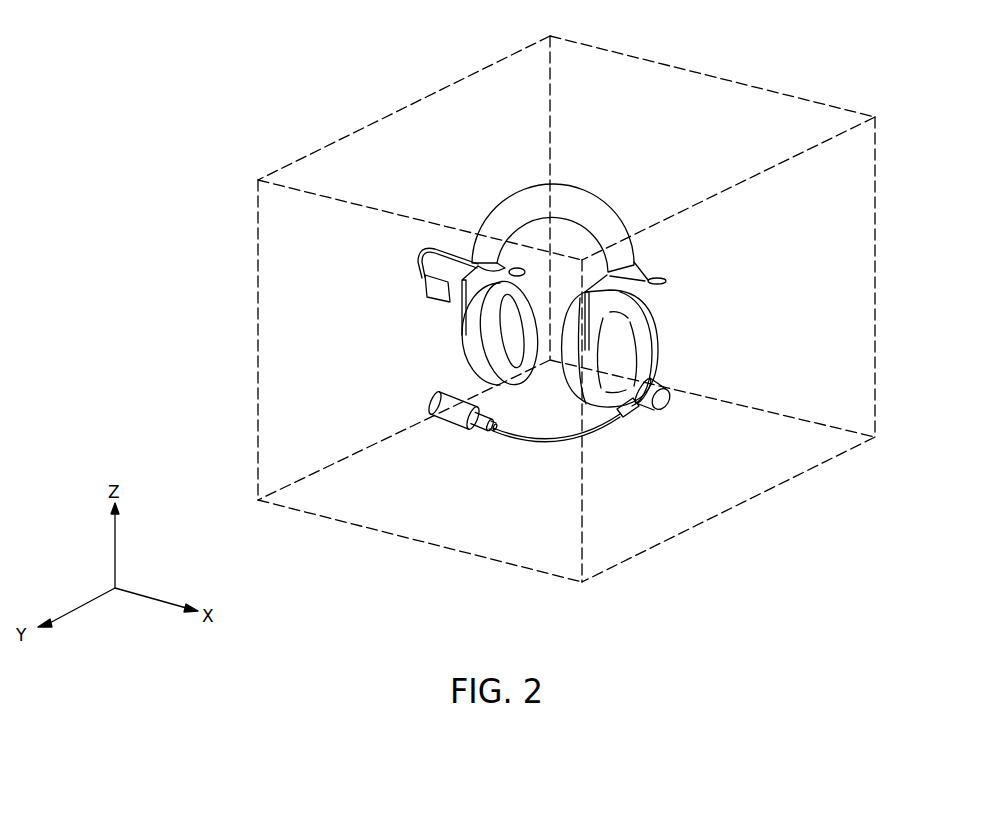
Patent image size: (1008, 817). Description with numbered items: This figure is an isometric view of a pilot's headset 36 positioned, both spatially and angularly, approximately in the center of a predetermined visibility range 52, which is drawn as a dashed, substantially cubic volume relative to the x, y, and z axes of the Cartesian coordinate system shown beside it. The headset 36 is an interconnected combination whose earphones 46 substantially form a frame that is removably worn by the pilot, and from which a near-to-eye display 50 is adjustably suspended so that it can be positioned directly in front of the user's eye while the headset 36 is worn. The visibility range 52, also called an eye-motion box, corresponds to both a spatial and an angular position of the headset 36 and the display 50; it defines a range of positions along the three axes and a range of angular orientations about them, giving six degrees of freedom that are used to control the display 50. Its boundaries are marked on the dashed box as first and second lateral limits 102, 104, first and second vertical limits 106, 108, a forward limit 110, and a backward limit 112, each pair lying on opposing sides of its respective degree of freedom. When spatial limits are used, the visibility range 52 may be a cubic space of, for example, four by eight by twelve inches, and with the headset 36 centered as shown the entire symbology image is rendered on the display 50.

The headset 36 is at (515, 186).
The earphones 46 is at (566, 295).
The near-to-eye (NTE) display 50 is at (425, 296).
The predetermined visibility range 52 is at (634, 58).
The first lateral limit 102 is at (771, 478).
The second lateral limit 104 is at (278, 314).
The first vertical limit 106 is at (641, 537).
The second vertical limit 108 is at (754, 98).
The forward limit 110 is at (478, 538).
The backward limit 112 is at (862, 362).